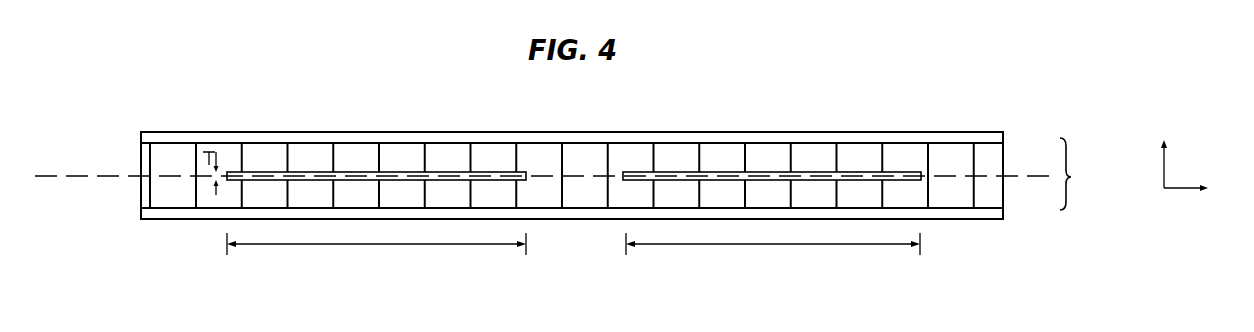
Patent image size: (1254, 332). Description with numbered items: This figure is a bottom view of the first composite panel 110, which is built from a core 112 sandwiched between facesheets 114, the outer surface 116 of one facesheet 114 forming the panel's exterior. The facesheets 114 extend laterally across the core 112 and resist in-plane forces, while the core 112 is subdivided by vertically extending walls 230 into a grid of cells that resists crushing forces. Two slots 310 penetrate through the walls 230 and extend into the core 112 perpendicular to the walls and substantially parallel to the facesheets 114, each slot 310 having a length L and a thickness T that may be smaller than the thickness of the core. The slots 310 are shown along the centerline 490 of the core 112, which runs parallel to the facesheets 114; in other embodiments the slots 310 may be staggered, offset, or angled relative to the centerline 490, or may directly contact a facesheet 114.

The first composite panel 110 is at (880, 87).
The core 112 is at (1084, 174).
The facesheets 114 is at (150, 138).
The surface 116 is at (541, 132).
The walls 230 is at (425, 152).
The slots 310 is at (318, 171).
The centerline 490 is at (574, 178).